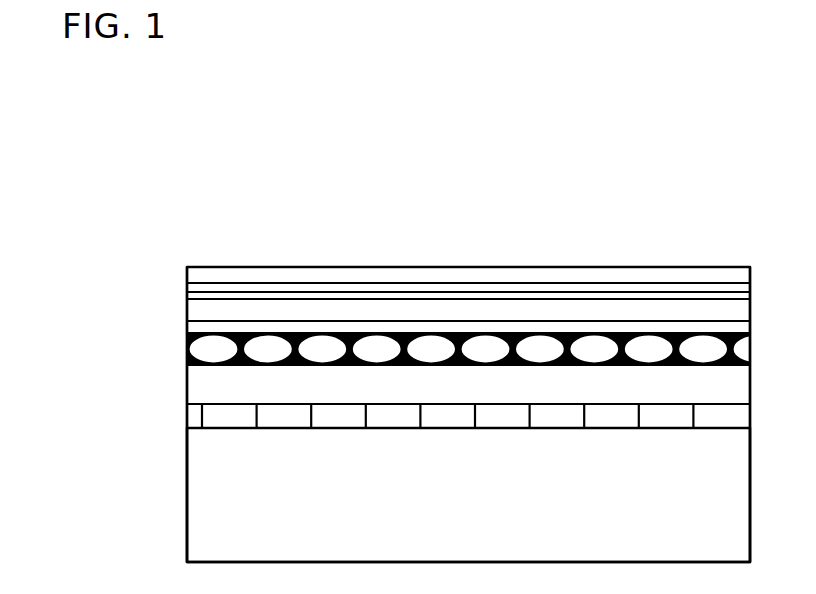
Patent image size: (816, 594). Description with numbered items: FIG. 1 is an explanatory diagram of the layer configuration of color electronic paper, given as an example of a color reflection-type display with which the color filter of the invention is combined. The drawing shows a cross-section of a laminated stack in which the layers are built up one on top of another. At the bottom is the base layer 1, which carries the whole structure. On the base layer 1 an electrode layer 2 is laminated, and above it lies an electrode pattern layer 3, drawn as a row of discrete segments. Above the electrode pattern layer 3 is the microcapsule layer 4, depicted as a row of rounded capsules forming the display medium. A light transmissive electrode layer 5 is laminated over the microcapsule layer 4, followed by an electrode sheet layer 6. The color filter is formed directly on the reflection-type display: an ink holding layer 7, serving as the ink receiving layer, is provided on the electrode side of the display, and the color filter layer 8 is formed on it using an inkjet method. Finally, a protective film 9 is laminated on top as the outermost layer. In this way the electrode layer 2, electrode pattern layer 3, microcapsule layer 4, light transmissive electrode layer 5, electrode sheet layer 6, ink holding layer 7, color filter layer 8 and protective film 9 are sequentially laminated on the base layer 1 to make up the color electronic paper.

The base layer 1 is at (195, 493).
The electrode layer 2 is at (187, 418).
The electrode pattern layer 3 is at (187, 385).
The microcapsule layer 4 is at (187, 349).
The light transmissive electrode layer 5 is at (187, 327).
The electrode sheet layer 6 is at (187, 303).
The ink holding layer 7 is at (187, 294).
The color filter layer 8 is at (187, 285).
The protective film 9 is at (187, 272).